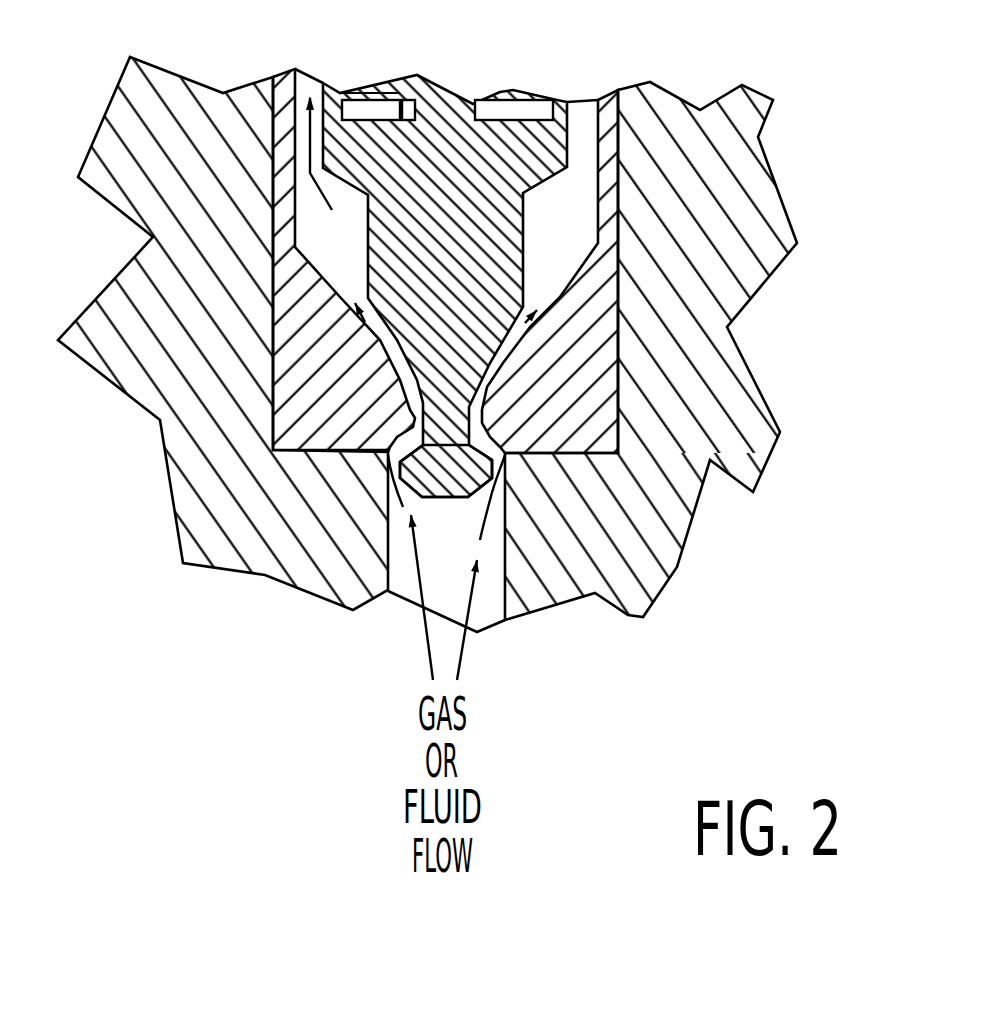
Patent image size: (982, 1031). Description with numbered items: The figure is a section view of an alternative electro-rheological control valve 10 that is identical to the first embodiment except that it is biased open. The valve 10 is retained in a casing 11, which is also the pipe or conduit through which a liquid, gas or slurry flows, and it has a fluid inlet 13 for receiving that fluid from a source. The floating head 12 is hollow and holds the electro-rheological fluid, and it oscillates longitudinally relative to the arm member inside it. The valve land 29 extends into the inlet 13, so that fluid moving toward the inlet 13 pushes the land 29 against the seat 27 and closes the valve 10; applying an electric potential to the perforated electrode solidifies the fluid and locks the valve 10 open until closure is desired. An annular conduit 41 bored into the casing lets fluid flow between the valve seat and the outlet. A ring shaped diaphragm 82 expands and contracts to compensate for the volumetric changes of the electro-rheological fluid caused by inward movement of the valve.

The valve 10 is at (595, 322).
The casing 11 is at (697, 420).
The floating head 12 is at (418, 258).
The fluid inlet 13 is at (402, 577).
The seat 27 is at (413, 413).
The valve land 29 is at (465, 497).
The annular conduit 41 is at (421, 209).
The ring shaped diaphragm 82 is at (400, 110).